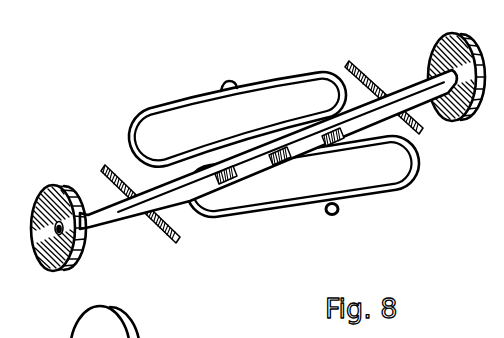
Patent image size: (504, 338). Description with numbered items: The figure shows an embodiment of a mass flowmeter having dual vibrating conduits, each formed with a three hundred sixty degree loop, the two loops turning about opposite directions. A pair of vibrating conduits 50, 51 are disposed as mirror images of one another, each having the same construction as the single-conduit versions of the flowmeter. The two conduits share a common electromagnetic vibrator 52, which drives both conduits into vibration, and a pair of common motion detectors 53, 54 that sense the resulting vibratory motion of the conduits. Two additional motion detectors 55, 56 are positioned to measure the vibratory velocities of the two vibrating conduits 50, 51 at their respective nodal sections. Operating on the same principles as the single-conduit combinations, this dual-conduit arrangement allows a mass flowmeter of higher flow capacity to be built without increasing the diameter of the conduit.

The vibrating conduit 50 is at (272, 78).
The vibrating conduit 51 is at (386, 195).
The electromagnetic vibrator 52 is at (290, 158).
The motion detector 53 is at (240, 183).
The motion detector 54 is at (336, 146).
The additional motion detector 55 is at (226, 79).
The additional motion detector 56 is at (344, 212).